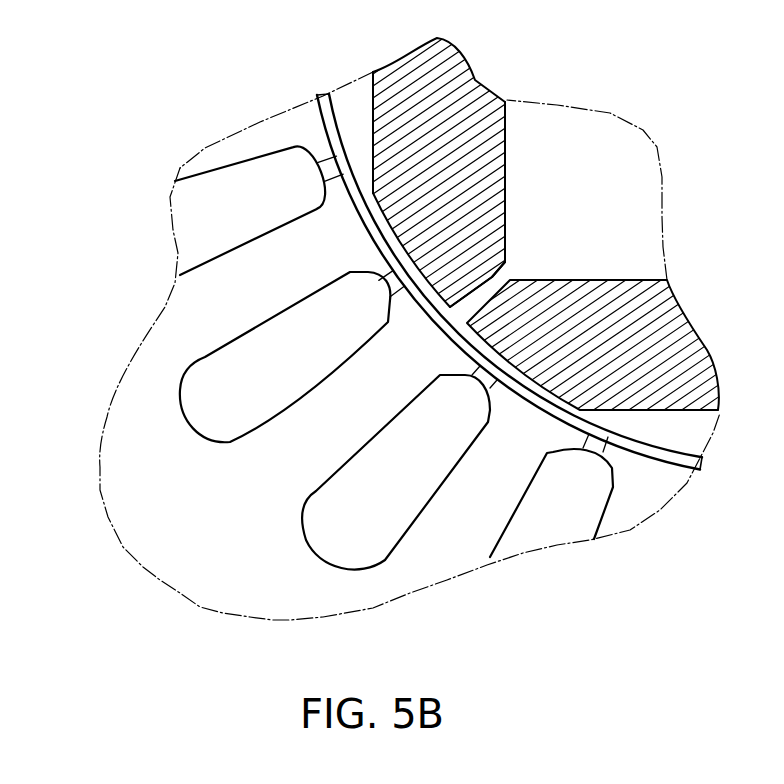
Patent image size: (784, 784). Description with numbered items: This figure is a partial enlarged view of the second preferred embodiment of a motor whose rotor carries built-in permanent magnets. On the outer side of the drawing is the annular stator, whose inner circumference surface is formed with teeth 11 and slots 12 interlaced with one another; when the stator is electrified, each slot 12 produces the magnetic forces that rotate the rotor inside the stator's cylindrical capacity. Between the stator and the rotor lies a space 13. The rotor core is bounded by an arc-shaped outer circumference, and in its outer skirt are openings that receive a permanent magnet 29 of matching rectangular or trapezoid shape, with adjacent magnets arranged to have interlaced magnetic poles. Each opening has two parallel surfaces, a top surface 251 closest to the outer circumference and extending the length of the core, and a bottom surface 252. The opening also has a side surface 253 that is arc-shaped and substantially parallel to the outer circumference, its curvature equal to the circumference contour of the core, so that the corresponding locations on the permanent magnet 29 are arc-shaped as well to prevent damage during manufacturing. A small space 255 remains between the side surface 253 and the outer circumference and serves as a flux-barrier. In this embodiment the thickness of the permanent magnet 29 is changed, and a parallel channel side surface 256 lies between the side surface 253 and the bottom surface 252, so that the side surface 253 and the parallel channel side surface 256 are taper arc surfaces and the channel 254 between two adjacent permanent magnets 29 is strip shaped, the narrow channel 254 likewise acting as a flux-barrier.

The tooth 11 is at (417, 340).
The slot 12 is at (417, 480).
The space 13 is at (535, 407).
The permanent magnet 29 is at (443, 103).
The top surface 251 is at (372, 150).
The bottom surface 252 is at (507, 177).
The side surface 253 is at (390, 228).
The channel 254 is at (565, 279).
The space 255 is at (393, 248).
The parallel channel side surface 256 is at (500, 273).